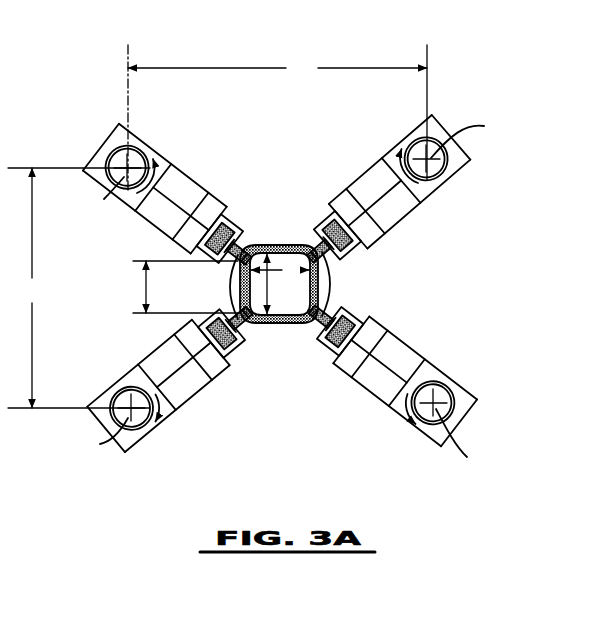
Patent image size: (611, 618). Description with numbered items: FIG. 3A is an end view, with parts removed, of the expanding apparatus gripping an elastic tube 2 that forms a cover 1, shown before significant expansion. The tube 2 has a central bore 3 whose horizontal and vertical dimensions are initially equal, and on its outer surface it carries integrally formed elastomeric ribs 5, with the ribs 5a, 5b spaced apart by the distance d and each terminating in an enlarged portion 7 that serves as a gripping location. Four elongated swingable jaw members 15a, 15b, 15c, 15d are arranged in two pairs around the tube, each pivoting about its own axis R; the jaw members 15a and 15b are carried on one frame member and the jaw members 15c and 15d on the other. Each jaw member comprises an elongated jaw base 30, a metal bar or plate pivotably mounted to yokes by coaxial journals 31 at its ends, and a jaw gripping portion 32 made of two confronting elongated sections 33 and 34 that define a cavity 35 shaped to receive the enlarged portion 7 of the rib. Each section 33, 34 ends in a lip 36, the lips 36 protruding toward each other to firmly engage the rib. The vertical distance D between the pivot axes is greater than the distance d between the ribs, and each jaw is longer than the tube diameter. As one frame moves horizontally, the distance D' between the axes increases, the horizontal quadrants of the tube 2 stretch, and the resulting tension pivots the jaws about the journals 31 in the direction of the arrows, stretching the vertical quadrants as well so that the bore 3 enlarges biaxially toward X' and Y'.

The cover 1 is at (276, 242).
The tube 2 is at (288, 245).
The bore 3 is at (290, 308).
The ribs 5 is at (280, 286).
The rib 5a is at (337, 284).
The rib 5b is at (224, 287).
The enlarged portion 7 is at (231, 226).
The jaw member 15a is at (433, 351).
The jaw member 15b is at (382, 145).
The jaw member 15c is at (201, 407).
The jaw member 15d is at (177, 155).
The jaw base 30 is at (143, 136).
The journal 31 is at (127, 162).
The jaw gripping portion 32 is at (333, 192).
The elongated section 33 is at (207, 197).
The elongated section 34 is at (187, 235).
The cavity 35 is at (203, 258).
The lip 36 is at (318, 241).